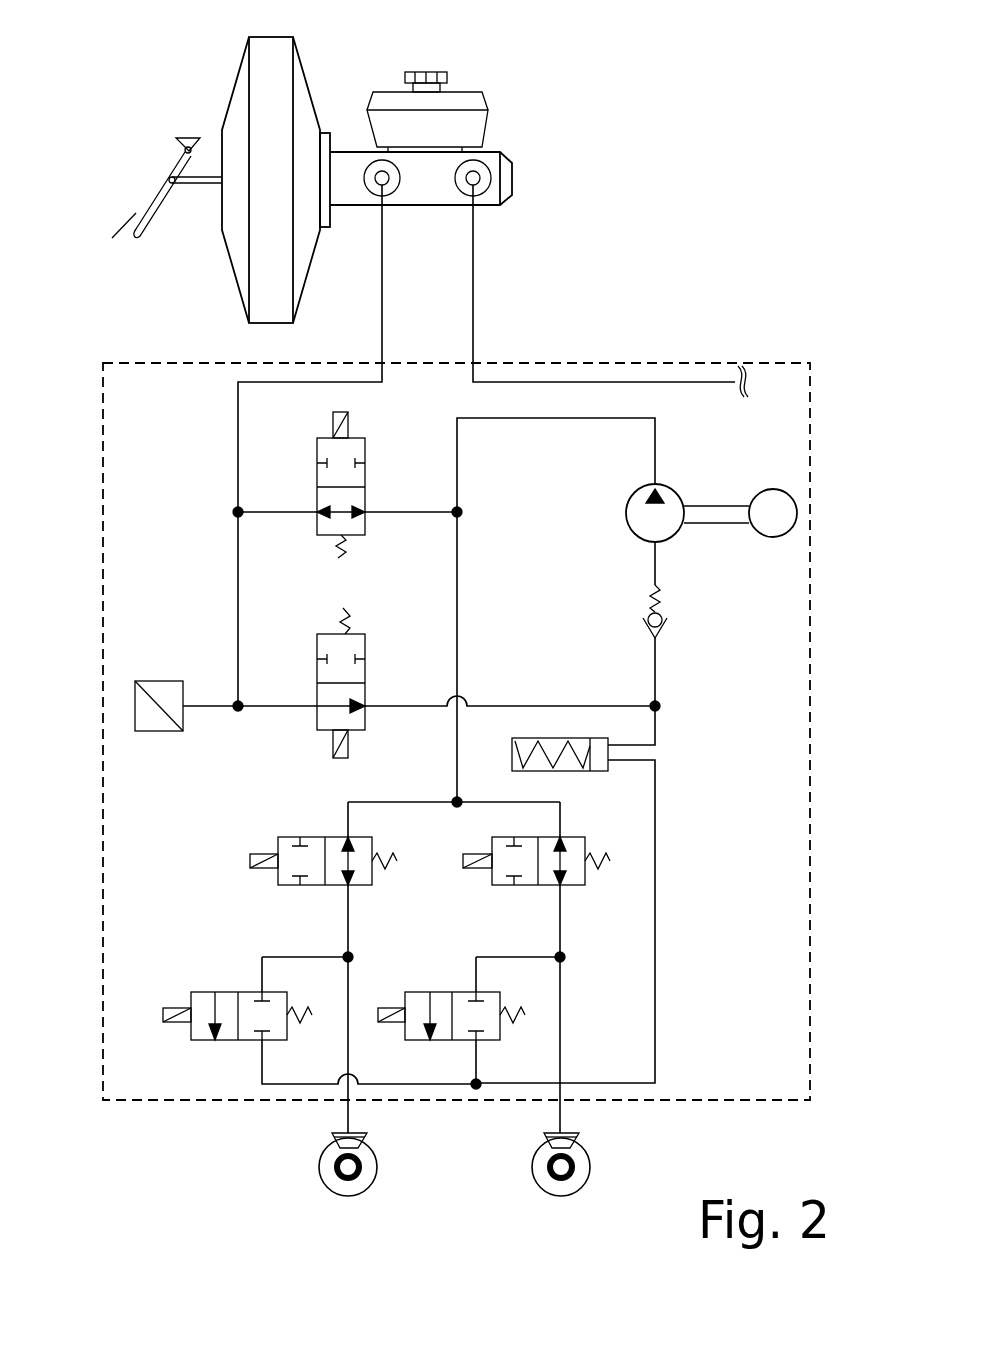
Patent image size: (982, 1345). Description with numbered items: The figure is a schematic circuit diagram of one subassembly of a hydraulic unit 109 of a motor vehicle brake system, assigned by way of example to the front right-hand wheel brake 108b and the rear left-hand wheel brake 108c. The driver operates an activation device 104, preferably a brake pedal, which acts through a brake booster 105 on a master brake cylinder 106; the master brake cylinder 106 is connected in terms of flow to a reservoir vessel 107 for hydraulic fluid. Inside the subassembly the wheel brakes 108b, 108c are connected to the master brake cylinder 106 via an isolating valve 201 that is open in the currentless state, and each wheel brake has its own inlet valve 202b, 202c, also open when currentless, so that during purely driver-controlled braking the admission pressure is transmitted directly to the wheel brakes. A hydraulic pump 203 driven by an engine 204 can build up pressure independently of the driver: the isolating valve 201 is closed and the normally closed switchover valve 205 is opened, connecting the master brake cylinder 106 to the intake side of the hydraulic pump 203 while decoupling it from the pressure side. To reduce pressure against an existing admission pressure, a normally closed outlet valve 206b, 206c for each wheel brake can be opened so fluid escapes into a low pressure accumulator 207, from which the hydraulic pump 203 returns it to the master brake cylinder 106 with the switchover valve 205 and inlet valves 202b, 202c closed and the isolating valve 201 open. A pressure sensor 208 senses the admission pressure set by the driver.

The activation device 104 is at (172, 163).
The brake booster 105 is at (240, 97).
The master brake cylinder 106 is at (507, 180).
The reservoir vessel 107 is at (465, 102).
The wheel brake 108b is at (330, 1178).
The wheel brake 108c is at (548, 1178).
The hydraulic unit 109 is at (770, 360).
The isolating valve 201 is at (317, 472).
The inlet valve 202b is at (298, 839).
The inlet valve 202c is at (585, 875).
The hydraulic pump 203 is at (673, 543).
The engine 204 is at (765, 487).
The switchover valve 205 is at (317, 646).
The outlet valve 206b is at (230, 1040).
The outlet valve 206c is at (416, 990).
The low pressure accumulator 207 is at (598, 772).
The pressure sensor 208 is at (135, 703).